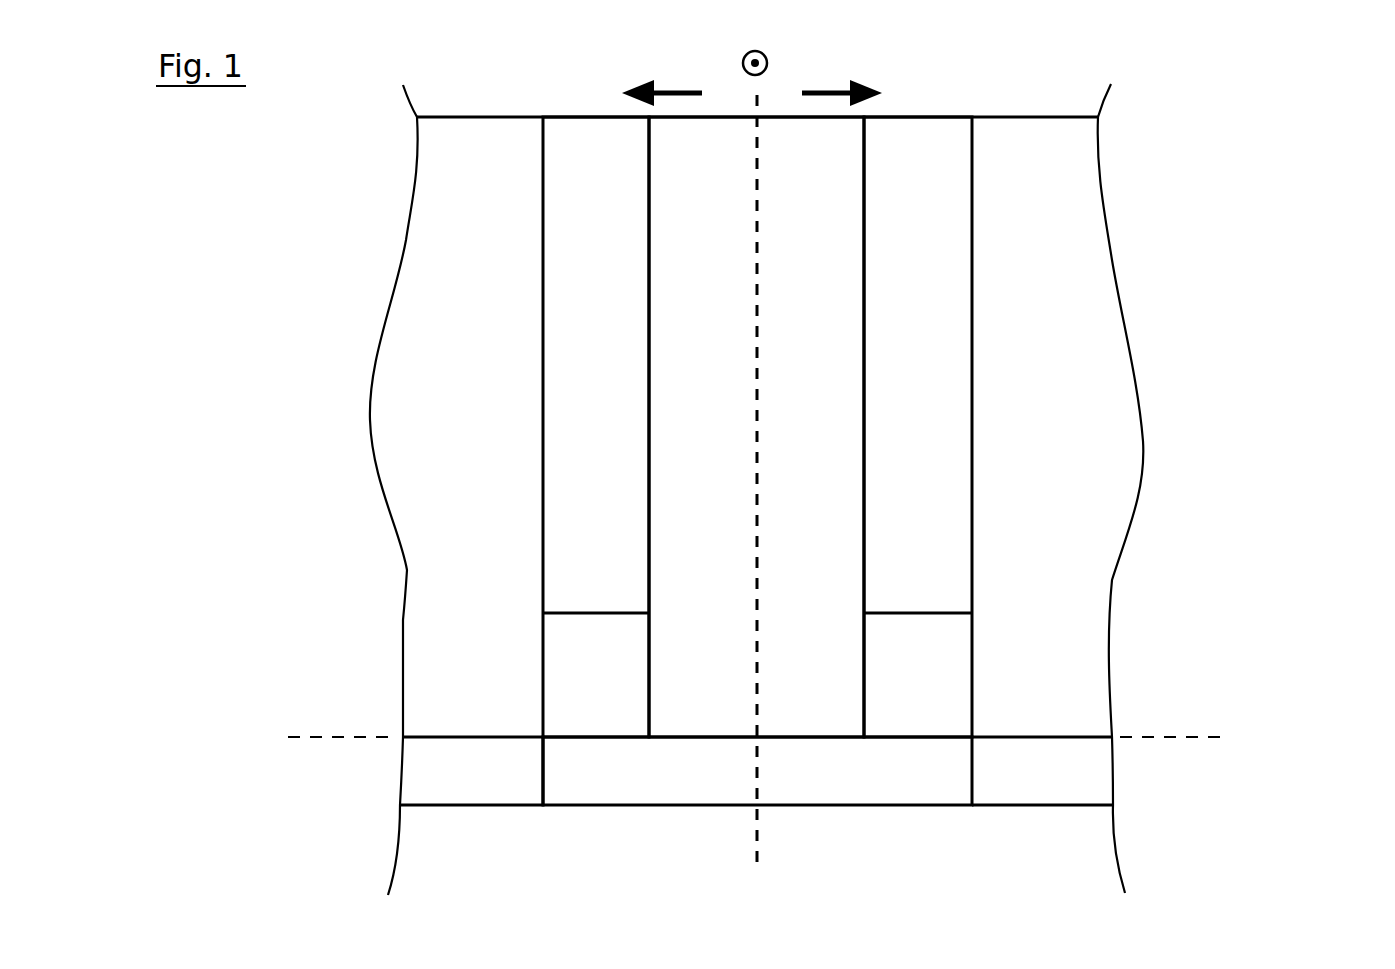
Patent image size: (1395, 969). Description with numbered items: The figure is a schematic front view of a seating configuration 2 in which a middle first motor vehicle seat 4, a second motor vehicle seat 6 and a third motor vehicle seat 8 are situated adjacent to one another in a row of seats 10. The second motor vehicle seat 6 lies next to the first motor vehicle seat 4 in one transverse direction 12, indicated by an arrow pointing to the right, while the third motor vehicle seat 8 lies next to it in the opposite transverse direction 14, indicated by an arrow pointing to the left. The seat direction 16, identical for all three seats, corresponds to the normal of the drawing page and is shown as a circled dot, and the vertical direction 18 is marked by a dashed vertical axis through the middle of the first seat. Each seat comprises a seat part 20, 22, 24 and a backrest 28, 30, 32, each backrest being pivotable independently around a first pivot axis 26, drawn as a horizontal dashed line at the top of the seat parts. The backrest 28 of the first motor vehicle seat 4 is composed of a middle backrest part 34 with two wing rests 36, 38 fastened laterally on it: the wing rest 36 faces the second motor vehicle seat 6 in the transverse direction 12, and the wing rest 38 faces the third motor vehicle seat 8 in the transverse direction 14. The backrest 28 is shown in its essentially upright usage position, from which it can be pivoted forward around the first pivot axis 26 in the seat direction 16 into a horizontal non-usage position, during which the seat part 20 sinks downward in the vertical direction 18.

The seating configuration 2 is at (1276, 134).
The first motor vehicle seat 4 is at (813, 842).
The second motor vehicle seat 6 is at (1058, 836).
The third motor vehicle seat 8 is at (469, 840).
The row of seats 10 is at (1166, 452).
The transverse direction 12 is at (830, 90).
The opposite transverse direction 14 is at (673, 90).
The seat direction 16 is at (741, 63).
The vertical direction 18 is at (752, 835).
The seat part 20 is at (830, 791).
The seat part 22 is at (1064, 791).
The seat part 24 is at (491, 791).
The first pivot axis 26 is at (1170, 738).
The backrest 28 is at (812, 190).
The backrest 30 is at (1099, 289).
The backrest 32 is at (468, 260).
The middle backrest part 34 is at (821, 360).
The wing rest 36 is at (939, 343).
The wing rest 38 is at (613, 348).